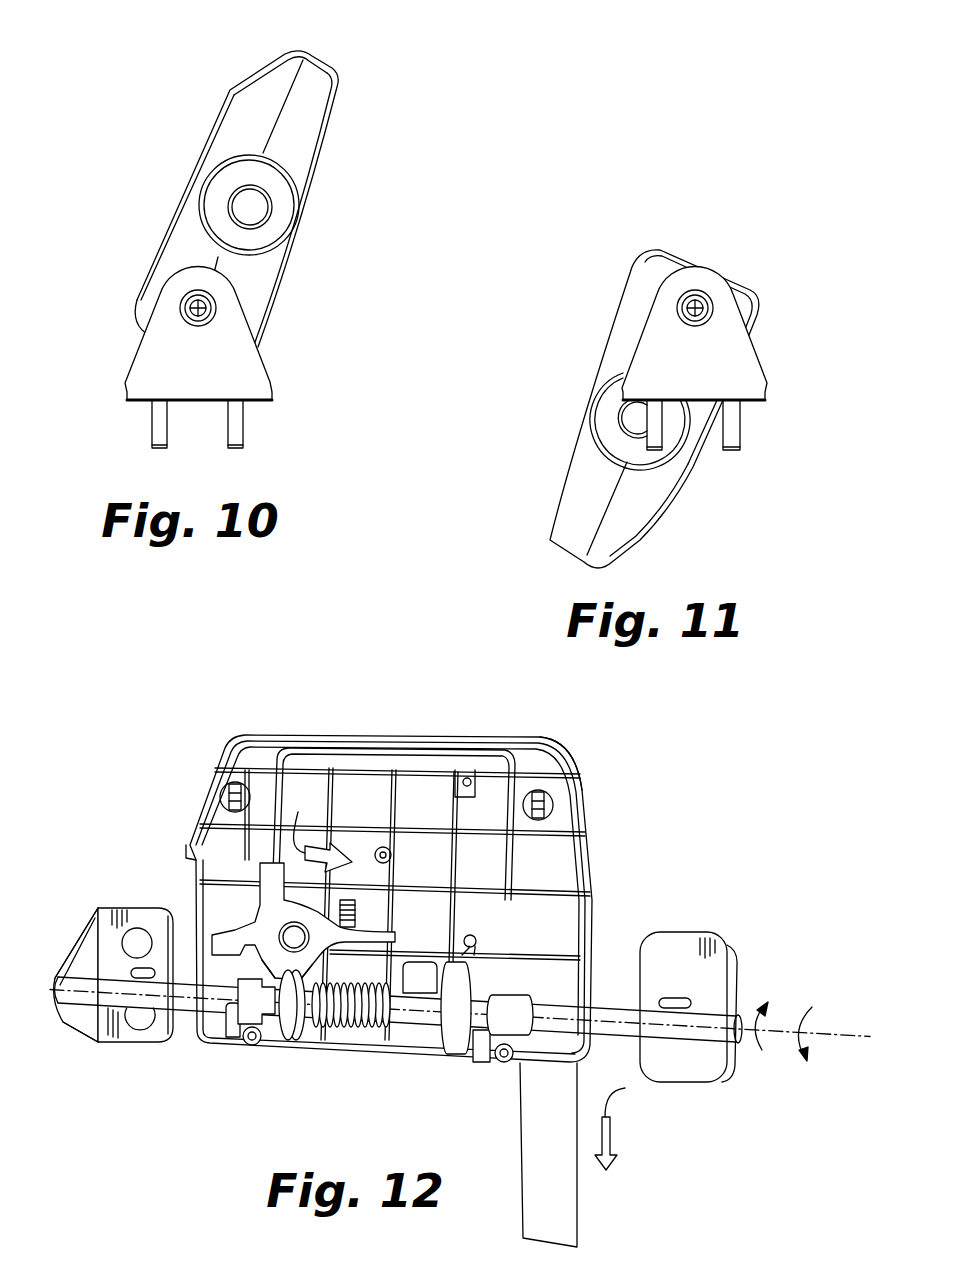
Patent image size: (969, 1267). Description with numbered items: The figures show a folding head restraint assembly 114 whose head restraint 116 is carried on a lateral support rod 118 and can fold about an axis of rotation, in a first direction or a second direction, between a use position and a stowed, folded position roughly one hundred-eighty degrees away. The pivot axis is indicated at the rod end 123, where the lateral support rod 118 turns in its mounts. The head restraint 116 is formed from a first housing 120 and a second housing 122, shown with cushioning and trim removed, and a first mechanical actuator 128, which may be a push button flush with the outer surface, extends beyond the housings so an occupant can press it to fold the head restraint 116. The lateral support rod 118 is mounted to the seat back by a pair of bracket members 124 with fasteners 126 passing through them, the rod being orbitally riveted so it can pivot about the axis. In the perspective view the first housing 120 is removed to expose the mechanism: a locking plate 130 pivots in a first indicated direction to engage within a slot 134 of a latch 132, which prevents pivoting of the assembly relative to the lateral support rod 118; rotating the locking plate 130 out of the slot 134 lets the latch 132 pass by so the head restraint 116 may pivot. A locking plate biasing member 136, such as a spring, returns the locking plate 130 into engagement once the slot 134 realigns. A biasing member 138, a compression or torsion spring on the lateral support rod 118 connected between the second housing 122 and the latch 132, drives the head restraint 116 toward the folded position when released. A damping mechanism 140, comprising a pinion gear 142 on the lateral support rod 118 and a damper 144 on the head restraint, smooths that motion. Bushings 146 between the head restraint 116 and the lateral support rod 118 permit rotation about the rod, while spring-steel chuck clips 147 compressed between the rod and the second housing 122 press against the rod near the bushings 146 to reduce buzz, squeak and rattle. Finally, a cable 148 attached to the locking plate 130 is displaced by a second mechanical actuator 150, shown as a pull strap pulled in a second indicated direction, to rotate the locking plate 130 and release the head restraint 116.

In FIG. 10, the folding head restraint assembly 114 is at (350, 188).
In FIG. 11, the folding head restraint assembly 114 is at (565, 355).
In FIG. 12, the folding head restraint assembly 114 is at (152, 818).
In FIG. 10, the head restraint 116 is at (333, 72).
In FIG. 11, the head restraint 116 is at (670, 250).
In FIG. 12, the head restraint 116 is at (223, 738).
In FIG. 10, the lateral support rod 118 is at (180, 307).
In FIG. 11, the lateral support rod 118 is at (677, 308).
In FIG. 12, the lateral support rod 118 is at (92, 1032).
In FIG. 10, the first housing 120 is at (228, 88).
In FIG. 11, the first housing 120 is at (683, 503).
In FIG. 10, the second housing 122 is at (333, 150).
In FIG. 11, the second housing 122 is at (570, 442).
In FIG. 12, the second housing 122 is at (565, 762).
In FIG. 10, the pivot rod 123 is at (210, 295).
In FIG. 11, the pivot rod 123 is at (710, 312).
In FIG. 12, the pivot rod 123 is at (53, 977).
In FIG. 10, the bracket member 124 is at (273, 393).
In FIG. 11, the bracket member 124 is at (760, 360).
In FIG. 12, the bracket member 124 is at (77, 917).
In FIG. 10, the fastener 126 is at (167, 418).
In FIG. 11, the fastener 126 is at (663, 433).
In FIG. 12, the fastener 126 is at (137, 932).
In FIG. 10, the first mechanical actuator 128 is at (228, 203).
In FIG. 11, the first mechanical actuator 128 is at (623, 423).
In FIG. 12, the locking plate 130 is at (243, 923).
In FIG. 12, the latch 132 is at (290, 1038).
In FIG. 12, the slot 134 is at (313, 972).
In FIG. 12, the locking plate biasing member 136 is at (357, 913).
In FIG. 12, the biasing member 138 is at (350, 1030).
In FIG. 12, the damping mechanism 140 is at (435, 1007).
In FIG. 12, the pinion gear 142 is at (457, 1045).
In FIG. 12, the damper 144 is at (423, 970).
In FIG. 12, the bushing 146 is at (250, 1040).
In FIG. 12, the chuck clip 147 is at (226, 1024).
In FIG. 12, the cable 148 is at (502, 748).
In FIG. 12, the second mechanical actuator 150 is at (578, 1172).